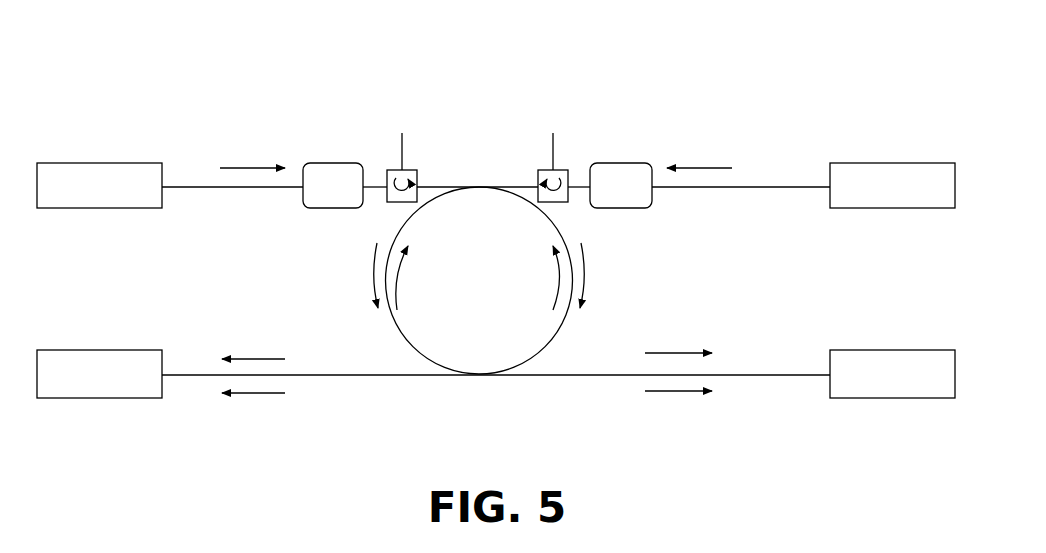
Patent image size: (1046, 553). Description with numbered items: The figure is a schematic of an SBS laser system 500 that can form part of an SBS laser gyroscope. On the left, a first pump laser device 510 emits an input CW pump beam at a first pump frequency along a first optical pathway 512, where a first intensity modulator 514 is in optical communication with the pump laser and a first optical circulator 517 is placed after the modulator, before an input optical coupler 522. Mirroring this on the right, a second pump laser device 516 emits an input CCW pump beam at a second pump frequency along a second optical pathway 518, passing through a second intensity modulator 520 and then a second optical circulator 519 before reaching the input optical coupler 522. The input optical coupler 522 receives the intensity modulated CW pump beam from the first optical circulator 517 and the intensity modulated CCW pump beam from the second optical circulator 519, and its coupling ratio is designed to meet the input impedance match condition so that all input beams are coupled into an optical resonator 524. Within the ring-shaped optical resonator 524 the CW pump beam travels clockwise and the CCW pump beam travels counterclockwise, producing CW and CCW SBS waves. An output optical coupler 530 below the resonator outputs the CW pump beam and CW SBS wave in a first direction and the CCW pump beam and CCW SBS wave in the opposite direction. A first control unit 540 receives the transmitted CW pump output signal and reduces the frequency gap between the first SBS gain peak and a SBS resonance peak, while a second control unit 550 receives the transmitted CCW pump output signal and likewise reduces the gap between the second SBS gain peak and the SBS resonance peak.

The SBS laser system 500 is at (676, 90).
The first pump laser device 510 is at (97, 162).
The first optical pathway 512 is at (258, 189).
The first intensity modulator 514 is at (330, 209).
The second pump laser device 516 is at (907, 162).
The first optical circulator 517 is at (387, 178).
The second optical pathway 518 is at (712, 189).
The second optical circulator 519 is at (538, 178).
The second intensity modulator 520 is at (622, 209).
The input optical coupler 522 is at (440, 186).
The optical resonator 524 is at (444, 370).
The output optical coupler 530 is at (422, 376).
The first control unit 540 is at (97, 350).
The second control unit 550 is at (907, 350).